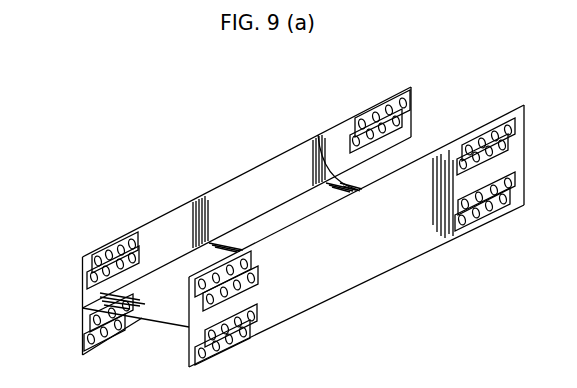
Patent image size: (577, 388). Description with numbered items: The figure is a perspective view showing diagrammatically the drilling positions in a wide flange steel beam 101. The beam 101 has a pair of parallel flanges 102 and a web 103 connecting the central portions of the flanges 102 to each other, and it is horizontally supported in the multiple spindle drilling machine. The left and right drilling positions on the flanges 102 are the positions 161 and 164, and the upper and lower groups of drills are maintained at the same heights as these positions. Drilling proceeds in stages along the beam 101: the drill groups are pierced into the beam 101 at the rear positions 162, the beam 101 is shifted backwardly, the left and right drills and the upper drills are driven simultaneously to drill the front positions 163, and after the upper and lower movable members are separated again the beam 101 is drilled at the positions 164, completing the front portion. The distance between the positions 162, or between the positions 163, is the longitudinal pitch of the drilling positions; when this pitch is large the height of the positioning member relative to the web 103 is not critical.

The wide flange steel beam 101 is at (270, 155).
The flanges 102 is at (212, 198).
The web 103 is at (318, 135).
The drilling positions 161 is at (379, 99).
The rear drilling positions 162 is at (414, 114).
The front drilling positions 163 is at (85, 283).
The drilling positions 164 is at (123, 240).